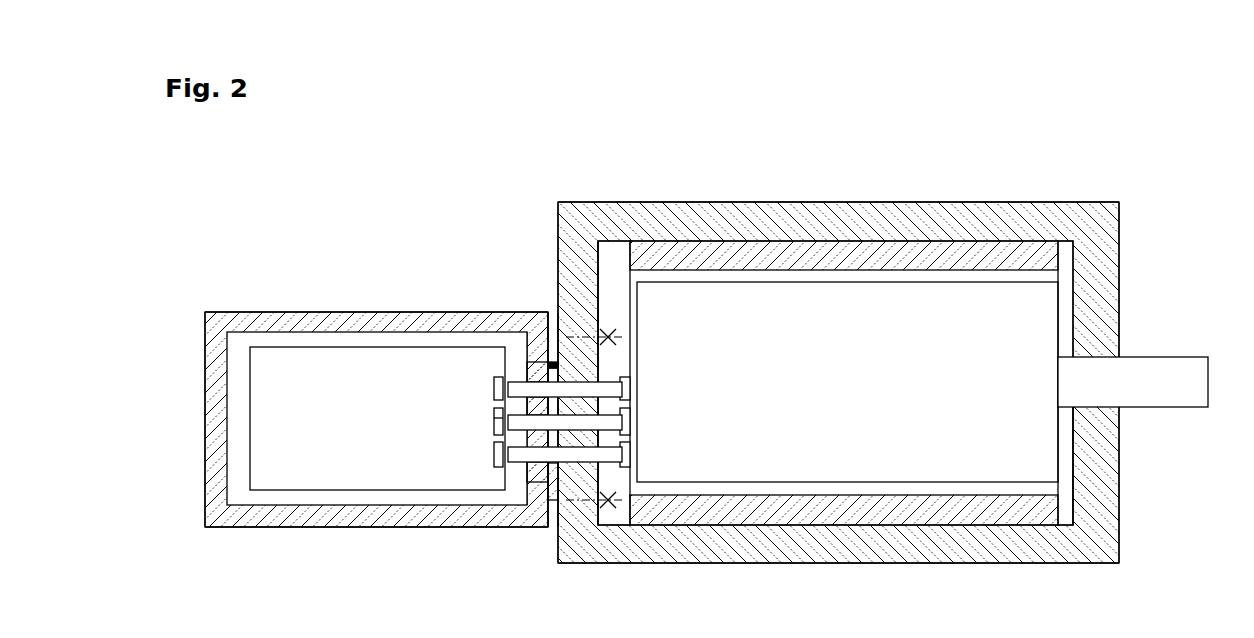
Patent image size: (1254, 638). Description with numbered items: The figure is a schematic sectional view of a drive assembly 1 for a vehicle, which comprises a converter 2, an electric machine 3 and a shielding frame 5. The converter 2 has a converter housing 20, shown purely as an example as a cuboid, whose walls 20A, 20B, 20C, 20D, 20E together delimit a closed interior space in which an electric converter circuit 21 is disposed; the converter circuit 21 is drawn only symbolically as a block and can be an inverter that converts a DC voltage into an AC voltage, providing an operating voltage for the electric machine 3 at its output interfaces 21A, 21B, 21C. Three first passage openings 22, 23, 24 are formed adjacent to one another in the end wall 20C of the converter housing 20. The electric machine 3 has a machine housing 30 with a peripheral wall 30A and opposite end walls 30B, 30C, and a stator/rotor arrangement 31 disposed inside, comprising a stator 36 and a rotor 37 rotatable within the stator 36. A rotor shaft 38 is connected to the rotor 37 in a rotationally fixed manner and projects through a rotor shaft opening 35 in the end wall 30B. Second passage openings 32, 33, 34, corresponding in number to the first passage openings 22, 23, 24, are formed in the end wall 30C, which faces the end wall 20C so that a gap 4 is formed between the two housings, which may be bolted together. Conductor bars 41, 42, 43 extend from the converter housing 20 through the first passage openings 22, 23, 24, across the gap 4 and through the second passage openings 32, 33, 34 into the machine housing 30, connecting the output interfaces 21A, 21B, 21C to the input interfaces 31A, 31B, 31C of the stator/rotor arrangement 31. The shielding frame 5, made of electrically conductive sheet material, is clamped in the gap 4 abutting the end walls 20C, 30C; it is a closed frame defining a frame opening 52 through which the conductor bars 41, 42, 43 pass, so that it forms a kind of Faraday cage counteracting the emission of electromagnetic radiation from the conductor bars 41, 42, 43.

The drive assembly 1 is at (430, 175).
The converter 2 is at (224, 292).
The electric machine 3 is at (783, 180).
The gap 4 is at (552, 534).
The shielding frame 5 is at (612, 335).
The converter housing 20 is at (205, 392).
The wall 20A is at (205, 422).
The wall 20B is at (300, 527).
The end wall 20C is at (537, 485).
The wall 20D is at (264, 312).
The wall 20E is at (238, 497).
The electric converter circuit 21 is at (317, 347).
The output interface 21A is at (494, 383).
The output interface 21B is at (494, 430).
The output interface 21C is at (494, 456).
The first passage opening 22 is at (552, 364).
The first passage opening 23 is at (494, 422).
The first passage opening 24 is at (552, 490).
The machine housing 30 is at (858, 202).
The peripheral wall 30A is at (925, 202).
The end wall 30B is at (1120, 262).
The end wall 30C is at (582, 240).
The stator/rotor arrangement 31 is at (748, 226).
The input interface 31A is at (632, 386).
The input interface 31B is at (632, 422).
The input interface 31C is at (632, 455).
The second passage opening 32 is at (585, 398).
The second passage opening 33 is at (590, 428).
The second passage opening 34 is at (575, 540).
The rotor shaft opening 35 is at (1095, 422).
The stator 36 is at (810, 250).
The rotor 37 is at (970, 282).
The rotor shaft 38 is at (1188, 372).
The conductor bar 41 is at (527, 375).
The conductor bar 42 is at (505, 406).
The conductor bar 43 is at (515, 455).
The frame opening 52 is at (560, 366).